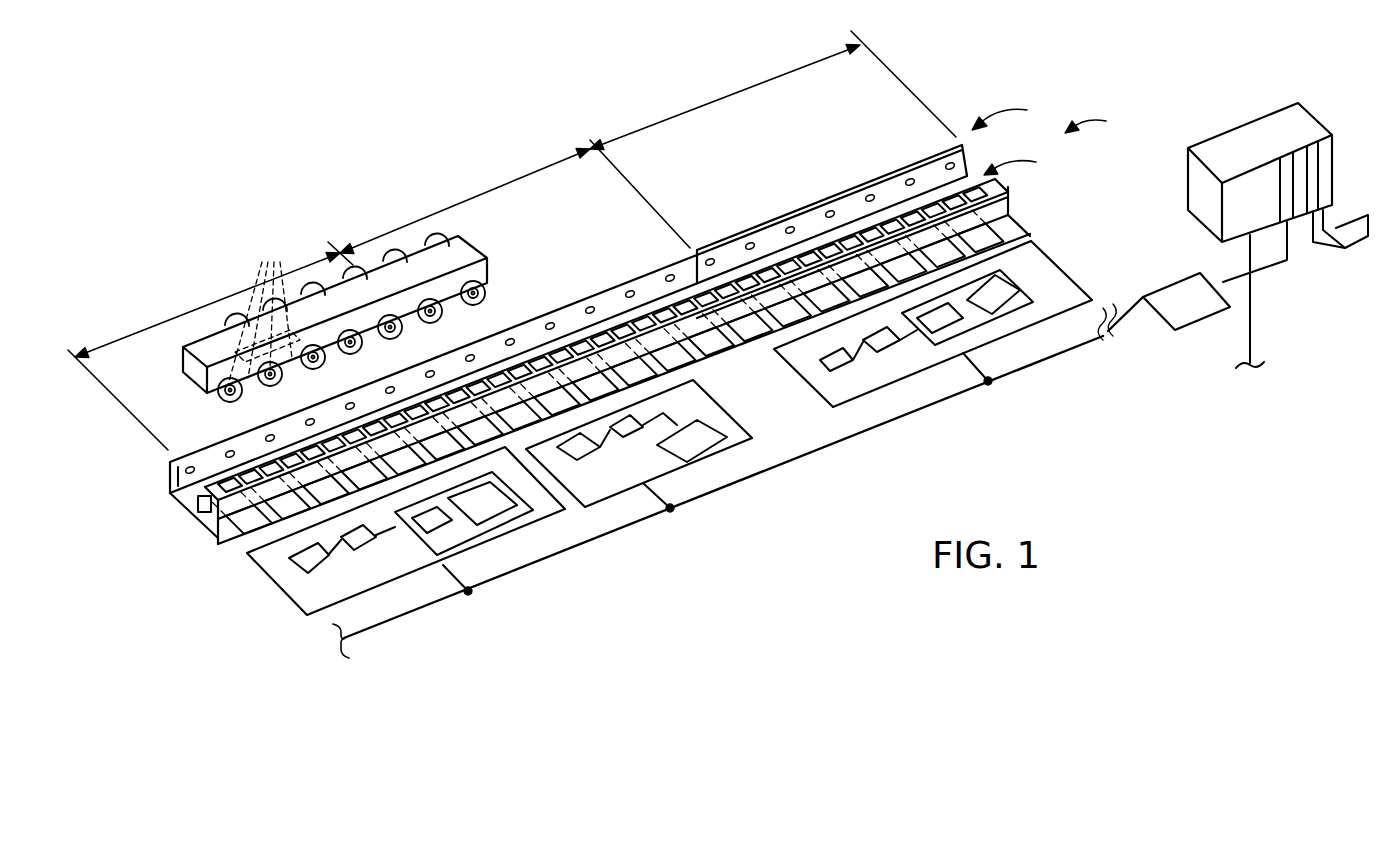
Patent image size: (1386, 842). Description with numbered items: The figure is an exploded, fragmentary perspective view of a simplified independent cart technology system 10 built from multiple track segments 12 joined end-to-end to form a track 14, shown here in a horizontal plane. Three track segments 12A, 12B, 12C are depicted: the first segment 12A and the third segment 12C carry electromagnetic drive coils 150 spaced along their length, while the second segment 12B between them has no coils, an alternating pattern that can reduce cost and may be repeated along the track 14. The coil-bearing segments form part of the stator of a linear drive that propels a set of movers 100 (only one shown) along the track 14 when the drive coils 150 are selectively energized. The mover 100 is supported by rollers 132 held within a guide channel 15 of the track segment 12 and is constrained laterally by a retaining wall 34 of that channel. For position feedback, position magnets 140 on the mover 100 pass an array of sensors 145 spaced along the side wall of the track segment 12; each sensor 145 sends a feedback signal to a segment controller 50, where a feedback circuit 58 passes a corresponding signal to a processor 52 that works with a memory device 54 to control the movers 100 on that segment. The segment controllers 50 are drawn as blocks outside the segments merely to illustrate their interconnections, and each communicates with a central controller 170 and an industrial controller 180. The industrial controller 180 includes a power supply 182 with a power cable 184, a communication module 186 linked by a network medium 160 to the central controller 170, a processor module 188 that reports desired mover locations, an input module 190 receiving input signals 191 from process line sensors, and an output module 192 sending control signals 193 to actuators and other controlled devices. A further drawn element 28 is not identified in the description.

The independent cart technology system 10 is at (1099, 121).
The track segment 12 is at (207, 415).
The first segment 12A is at (247, 289).
The second segment 12B is at (500, 187).
The third segment 12C is at (770, 85).
The track 14 is at (1013, 113).
The guide channel 15 is at (1025, 161).
The housing 28 is at (250, 553).
The retaining wall 34 is at (697, 248).
The segment controller 50 is at (287, 597).
The processor 52 is at (366, 550).
The memory device 54 is at (483, 550).
The feedback circuit 58 is at (283, 555).
The mover 100 is at (330, 318).
The rollers 132 is at (484, 288).
The position magnets 140 is at (351, 318).
The sensors 145 is at (348, 403).
The drive coils 150 is at (232, 492).
The network medium 160 is at (1225, 282).
The central controller 170 is at (1205, 316).
The industrial controller 180 is at (1223, 145).
The power supply 182 is at (1237, 202).
The power cable 184 is at (1252, 313).
The communication module 186 is at (1282, 155).
The processor module 188 is at (1303, 165).
The input module 190 is at (1313, 140).
The input signals 191 is at (1340, 246).
The output module 192 is at (1327, 165).
The control signals 193 is at (1340, 222).